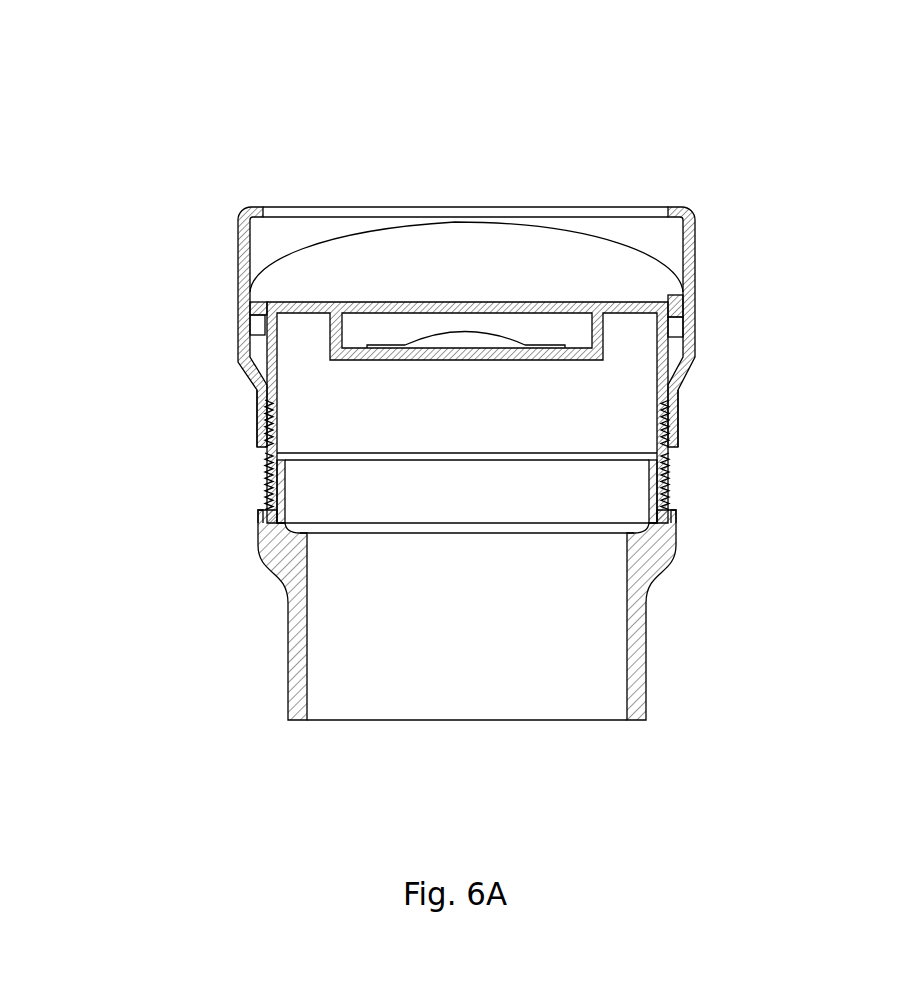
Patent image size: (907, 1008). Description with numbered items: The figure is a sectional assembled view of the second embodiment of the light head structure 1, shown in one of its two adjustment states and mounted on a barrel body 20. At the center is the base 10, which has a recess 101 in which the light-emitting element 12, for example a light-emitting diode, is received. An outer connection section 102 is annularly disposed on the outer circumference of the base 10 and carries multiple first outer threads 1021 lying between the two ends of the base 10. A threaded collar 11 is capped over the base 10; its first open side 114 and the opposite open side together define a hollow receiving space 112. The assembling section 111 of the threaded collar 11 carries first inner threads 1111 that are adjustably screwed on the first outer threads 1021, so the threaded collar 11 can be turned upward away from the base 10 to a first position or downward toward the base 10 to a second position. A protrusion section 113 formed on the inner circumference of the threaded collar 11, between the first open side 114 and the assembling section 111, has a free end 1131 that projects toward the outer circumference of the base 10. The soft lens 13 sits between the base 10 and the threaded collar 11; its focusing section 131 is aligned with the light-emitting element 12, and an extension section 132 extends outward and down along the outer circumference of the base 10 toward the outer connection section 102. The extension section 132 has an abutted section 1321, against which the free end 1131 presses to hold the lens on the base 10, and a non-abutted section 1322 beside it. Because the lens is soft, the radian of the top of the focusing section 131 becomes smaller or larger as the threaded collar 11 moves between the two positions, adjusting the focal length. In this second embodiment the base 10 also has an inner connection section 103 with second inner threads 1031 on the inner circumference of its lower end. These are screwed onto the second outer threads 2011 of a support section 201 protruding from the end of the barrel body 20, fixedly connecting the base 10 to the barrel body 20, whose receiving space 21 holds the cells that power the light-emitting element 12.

The light head structure 1 is at (725, 211).
The base 10 is at (276, 300).
The recess 101 is at (578, 317).
The outer connection section 102 is at (667, 463).
The first outer threads 1021 is at (667, 472).
The inner connection section 103 is at (267, 508).
The second inner threads 1031 is at (258, 519).
The threaded collar 11 is at (690, 208).
The assembling section 111 is at (673, 417).
The first inner threads 1111 is at (667, 427).
The receiving space 112 is at (253, 351).
The protrusion section 113 is at (250, 307).
The free end 1131 is at (266, 303).
The first open side 114 is at (272, 210).
The light-emitting element 12 is at (480, 337).
The soft lens 13 is at (363, 233).
The focusing section 131 is at (458, 240).
The extension section 132 is at (847, 276).
The abutted section 1321 is at (673, 296).
The non-abutted section 1322 is at (673, 327).
The barrel body 20 is at (645, 665).
The support section 201 is at (267, 450).
The second outer threads 2011 is at (267, 500).
The receiving space 21 is at (324, 661).